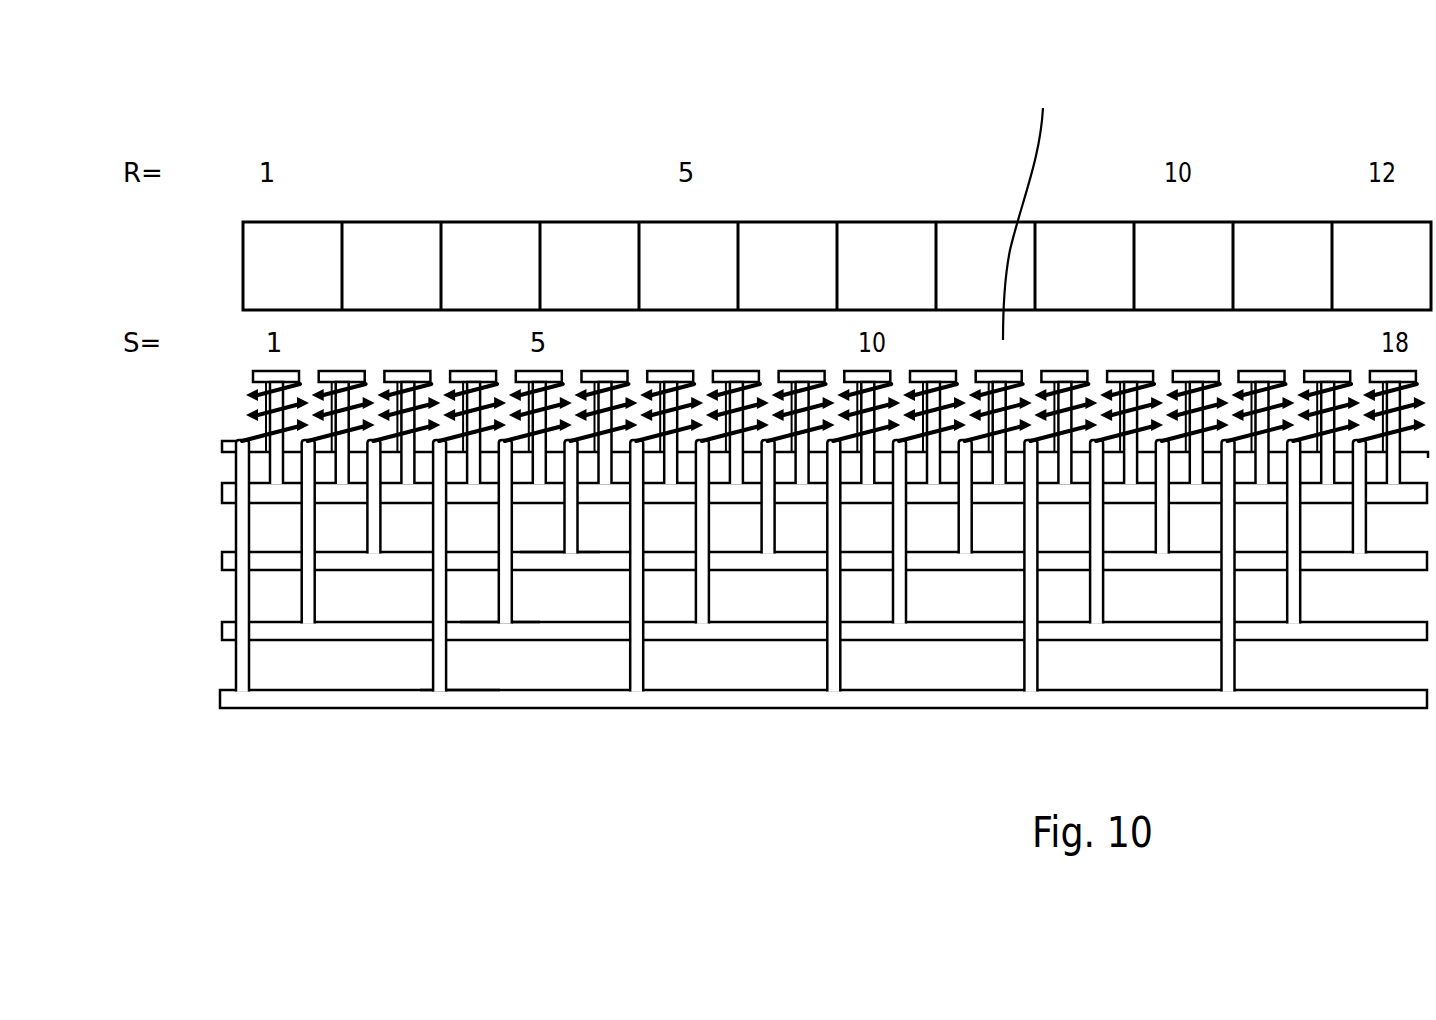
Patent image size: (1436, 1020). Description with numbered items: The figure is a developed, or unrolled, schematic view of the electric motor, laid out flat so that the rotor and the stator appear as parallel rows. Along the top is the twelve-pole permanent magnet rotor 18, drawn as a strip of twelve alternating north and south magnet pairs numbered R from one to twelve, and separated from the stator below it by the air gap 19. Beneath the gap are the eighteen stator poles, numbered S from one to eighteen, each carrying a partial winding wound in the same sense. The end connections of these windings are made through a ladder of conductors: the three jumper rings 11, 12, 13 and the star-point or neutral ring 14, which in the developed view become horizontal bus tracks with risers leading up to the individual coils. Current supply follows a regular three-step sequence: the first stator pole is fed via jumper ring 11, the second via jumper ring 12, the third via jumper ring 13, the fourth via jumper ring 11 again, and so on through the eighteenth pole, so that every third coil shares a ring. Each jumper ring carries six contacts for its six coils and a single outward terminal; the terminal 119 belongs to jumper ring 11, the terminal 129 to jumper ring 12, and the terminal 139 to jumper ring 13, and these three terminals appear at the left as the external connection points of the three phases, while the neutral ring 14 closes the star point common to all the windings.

The rotor 18 is at (240, 273).
The air gap 19 is at (1027, 209).
The jumper ring 11 is at (462, 697).
The jumper ring 12 is at (498, 630).
The jumper ring 13 is at (555, 558).
The star-point or neutral ring 14 is at (610, 490).
The terminal 119 is at (220, 695).
The terminal 129 is at (222, 628).
The terminal 139 is at (222, 558).